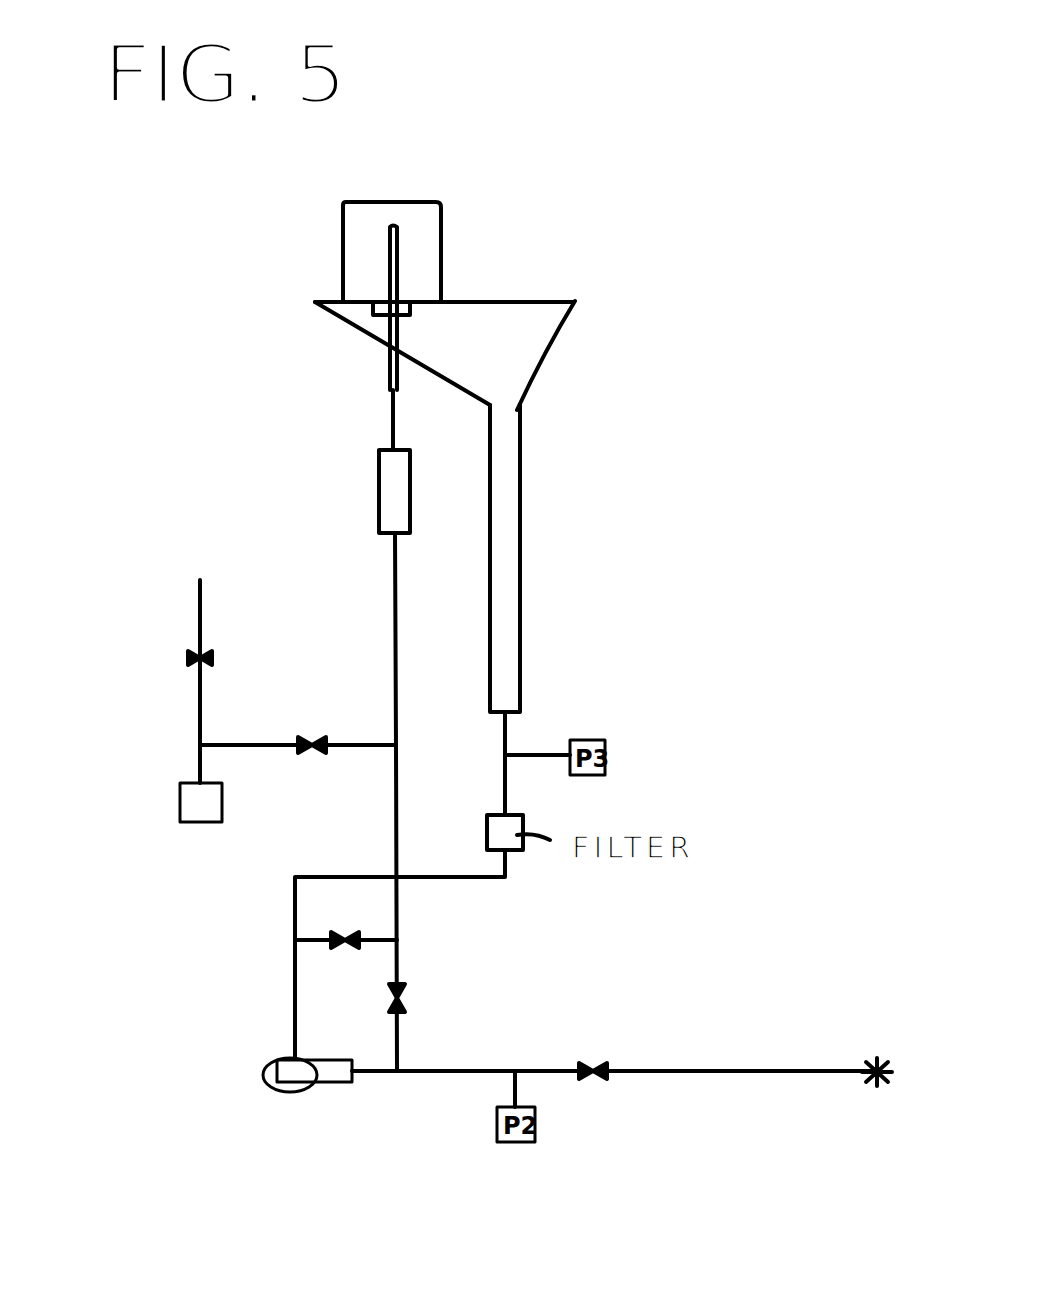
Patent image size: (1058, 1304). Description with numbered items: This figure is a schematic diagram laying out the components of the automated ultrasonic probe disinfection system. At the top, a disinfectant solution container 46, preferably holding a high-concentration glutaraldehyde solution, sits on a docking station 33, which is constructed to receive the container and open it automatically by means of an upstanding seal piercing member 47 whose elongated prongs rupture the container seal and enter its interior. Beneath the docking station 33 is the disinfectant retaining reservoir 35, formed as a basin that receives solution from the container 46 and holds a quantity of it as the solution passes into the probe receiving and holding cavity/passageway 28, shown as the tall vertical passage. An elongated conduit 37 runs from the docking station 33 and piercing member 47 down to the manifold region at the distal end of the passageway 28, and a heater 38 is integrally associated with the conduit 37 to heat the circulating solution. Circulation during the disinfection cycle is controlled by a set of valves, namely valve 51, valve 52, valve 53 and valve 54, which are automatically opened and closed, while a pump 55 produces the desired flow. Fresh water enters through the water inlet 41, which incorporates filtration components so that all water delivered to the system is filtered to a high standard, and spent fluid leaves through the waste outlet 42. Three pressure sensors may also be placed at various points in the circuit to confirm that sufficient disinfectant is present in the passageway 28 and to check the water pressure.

The probe receiving and holding cavity/passageway 28 is at (515, 515).
The docking station 33 is at (343, 298).
The disinfectant retaining reservoir 35 is at (528, 338).
The elongated conduit 37 is at (397, 634).
The heater 38 is at (390, 490).
The water inlet 41 is at (200, 580).
The waste outlet 42 is at (875, 1072).
The disinfectant solution container 46 is at (443, 222).
The seal piercing member 47 is at (397, 252).
The valve (V1) 51 is at (327, 752).
The valve (V2) 52 is at (402, 1000).
The valve (V3) 53 is at (608, 1070).
The valve (V4) 54 is at (358, 935).
The pump 55 is at (290, 1093).